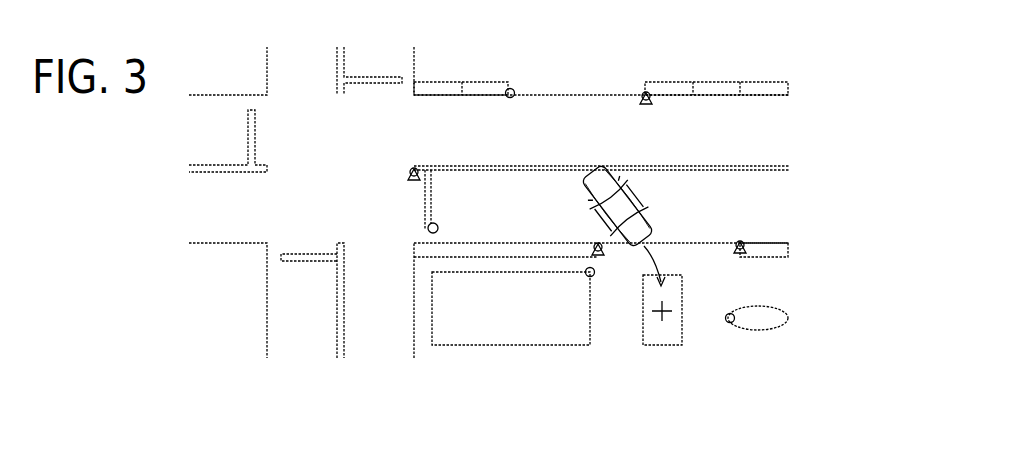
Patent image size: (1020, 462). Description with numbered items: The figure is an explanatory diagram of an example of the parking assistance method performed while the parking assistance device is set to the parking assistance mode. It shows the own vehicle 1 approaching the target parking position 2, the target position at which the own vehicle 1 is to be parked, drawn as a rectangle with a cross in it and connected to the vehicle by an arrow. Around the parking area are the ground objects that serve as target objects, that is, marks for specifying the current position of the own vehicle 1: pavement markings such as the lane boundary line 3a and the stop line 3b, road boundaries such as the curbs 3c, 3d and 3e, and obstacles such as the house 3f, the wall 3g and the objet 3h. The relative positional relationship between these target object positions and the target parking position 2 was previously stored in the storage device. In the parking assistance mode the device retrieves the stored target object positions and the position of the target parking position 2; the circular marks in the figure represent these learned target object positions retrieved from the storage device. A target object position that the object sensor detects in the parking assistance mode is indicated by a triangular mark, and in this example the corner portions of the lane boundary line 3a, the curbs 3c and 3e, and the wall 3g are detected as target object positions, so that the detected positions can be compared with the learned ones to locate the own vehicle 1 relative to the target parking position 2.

The own vehicle 1 is at (632, 194).
The target parking position 2 is at (672, 311).
The lane boundary line 3a is at (533, 166).
The stop line 3b is at (434, 197).
The curb 3c is at (669, 82).
The curb 3d is at (487, 82).
The curb 3e is at (764, 243).
The house 3f is at (590, 310).
The wall 3g is at (532, 243).
The objet 3h is at (765, 306).